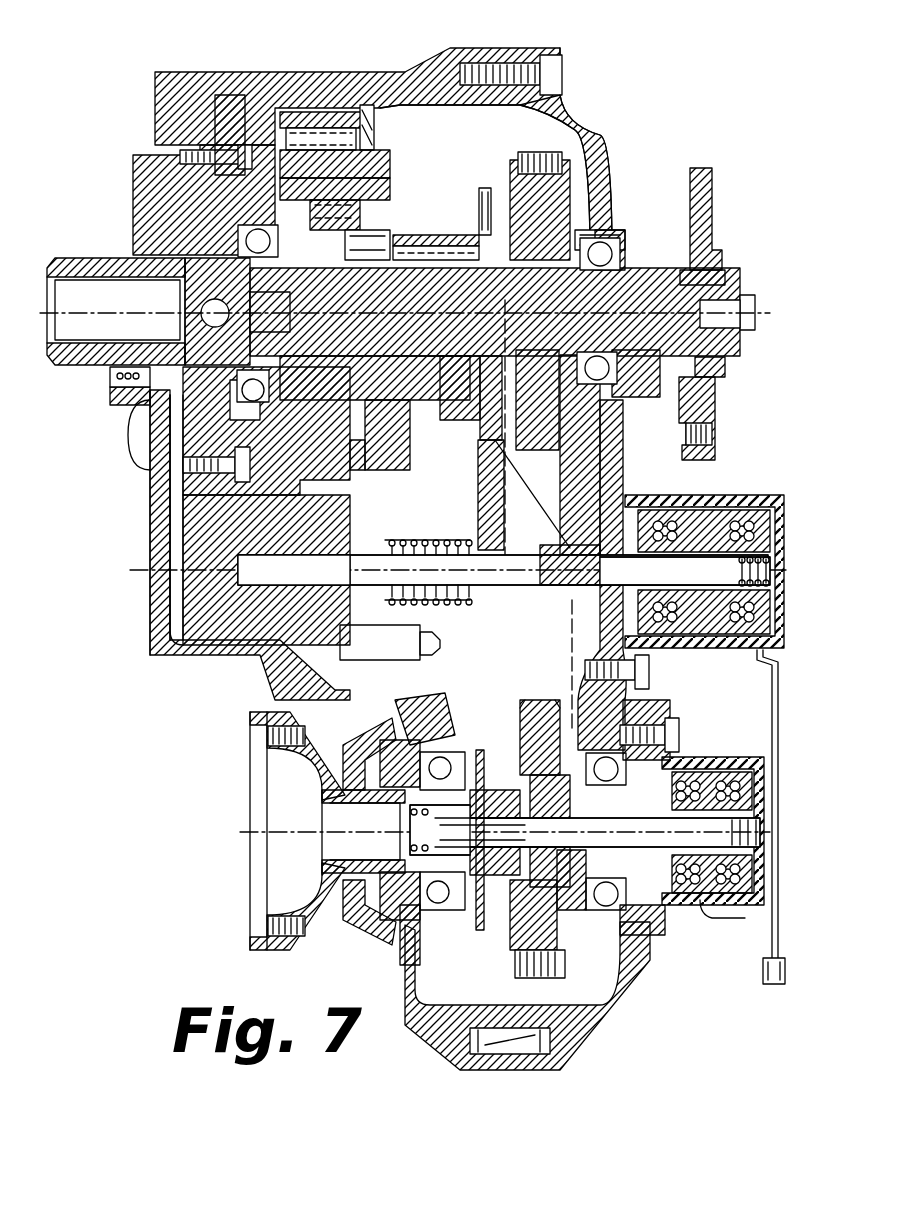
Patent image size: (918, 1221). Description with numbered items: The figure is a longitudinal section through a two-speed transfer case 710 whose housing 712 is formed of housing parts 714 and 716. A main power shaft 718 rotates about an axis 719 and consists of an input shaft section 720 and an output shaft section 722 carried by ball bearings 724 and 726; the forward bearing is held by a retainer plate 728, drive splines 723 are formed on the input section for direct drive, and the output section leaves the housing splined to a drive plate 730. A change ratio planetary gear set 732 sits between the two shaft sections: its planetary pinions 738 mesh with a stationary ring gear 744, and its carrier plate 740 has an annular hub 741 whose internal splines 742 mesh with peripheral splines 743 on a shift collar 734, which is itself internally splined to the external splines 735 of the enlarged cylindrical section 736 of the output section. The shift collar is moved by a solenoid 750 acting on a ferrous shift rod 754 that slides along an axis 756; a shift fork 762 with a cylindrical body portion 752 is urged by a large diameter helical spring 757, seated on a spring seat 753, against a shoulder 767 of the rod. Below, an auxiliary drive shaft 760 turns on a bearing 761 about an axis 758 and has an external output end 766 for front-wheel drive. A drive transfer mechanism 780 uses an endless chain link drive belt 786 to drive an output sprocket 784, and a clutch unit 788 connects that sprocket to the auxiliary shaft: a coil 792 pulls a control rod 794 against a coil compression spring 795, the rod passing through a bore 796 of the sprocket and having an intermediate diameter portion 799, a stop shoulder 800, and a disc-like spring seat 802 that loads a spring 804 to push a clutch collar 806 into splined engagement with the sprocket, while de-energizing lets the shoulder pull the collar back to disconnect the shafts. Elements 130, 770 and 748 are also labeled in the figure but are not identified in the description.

The housing 712 is at (470, 45).
The multi-ratio transfer case 710 is at (612, 122).
The retainer plate 728 is at (228, 100).
The ring gear 744 is at (318, 118).
The planetary pinions 738 is at (365, 100).
The change ratio planetary gear set 732 is at (402, 134).
The external splines 735 is at (520, 200).
The shift collar 734 is at (478, 215).
The internal splines 742 is at (415, 232).
The drive splines 723 is at (367, 238).
The endless chain link drive belt 786 is at (555, 160).
The housing part 716 is at (608, 168).
The drive transfer mechanism 780 is at (598, 240).
The output shaft section 722 is at (660, 240).
The gear 130 is at (705, 202).
The main power shaft 718 is at (100, 258).
The axis 719 is at (72, 345).
The input shaft section 720 is at (108, 370).
The ball bearing 724 is at (255, 335).
The ball bearing 726 is at (405, 312).
The enlarged cylindrical section 736 is at (532, 430).
The cylindrical body portion 752 is at (505, 380).
The peripheral splines 743 is at (455, 400).
The annular hub 741 is at (478, 410).
The shift fork 762 is at (478, 484).
The large diameter helical spring 757 is at (440, 545).
The spring seat 753 is at (388, 604).
The shoulder 767 is at (440, 615).
The ferrous shift rod 754 is at (545, 585).
The housing part 714 is at (155, 545).
The axis 756 is at (150, 605).
The stop shoulder 800 is at (431, 567).
The electromagnetic actuator 750 is at (715, 517).
The shaft spring 770 is at (740, 574).
The coil 792 is at (700, 905).
The carrier plate 740 is at (745, 755).
The coil compression spring 795 is at (505, 832).
The output sprocket 784 is at (538, 700).
The clutch unit 788 is at (470, 790).
The intermediate diameter portion 799 is at (472, 820).
The bore of output sprocket 796 is at (552, 810).
The auxiliary drive shaft 760 is at (355, 780).
The bearing 761 is at (400, 740).
The spring 804 is at (400, 814).
The spring seat 802 is at (400, 848).
The clutch collar 806 is at (385, 905).
The axis 758 is at (270, 845).
The external output end 766 is at (285, 722).
The plate 748 is at (480, 912).
The shift or control rod 794 is at (527, 960).
The drive plate 730 is at (425, 920).